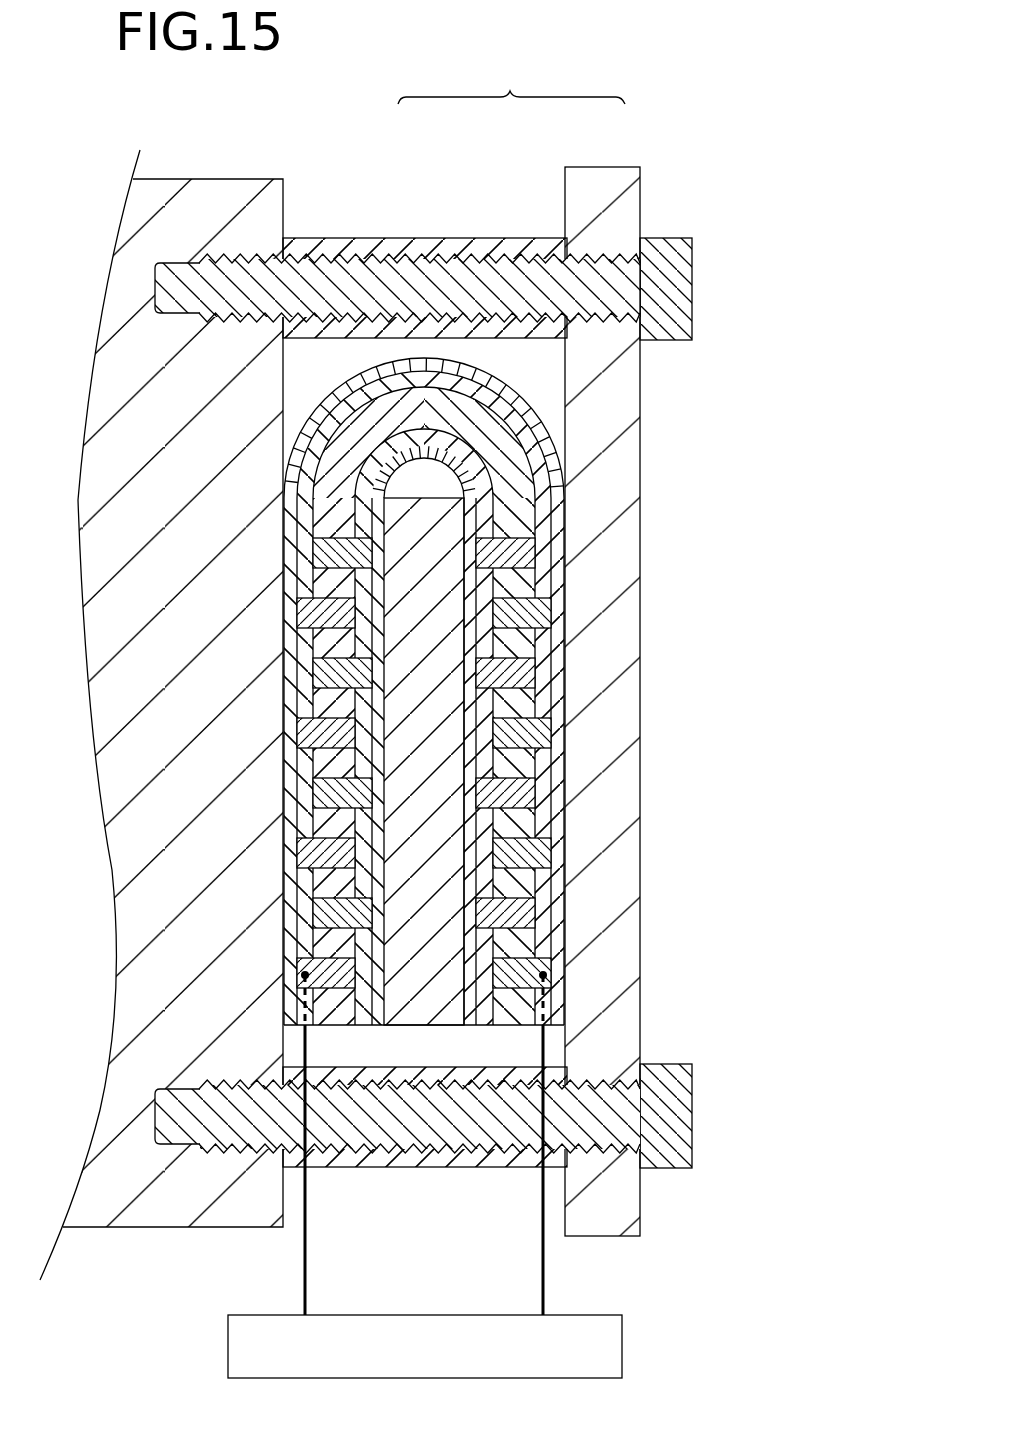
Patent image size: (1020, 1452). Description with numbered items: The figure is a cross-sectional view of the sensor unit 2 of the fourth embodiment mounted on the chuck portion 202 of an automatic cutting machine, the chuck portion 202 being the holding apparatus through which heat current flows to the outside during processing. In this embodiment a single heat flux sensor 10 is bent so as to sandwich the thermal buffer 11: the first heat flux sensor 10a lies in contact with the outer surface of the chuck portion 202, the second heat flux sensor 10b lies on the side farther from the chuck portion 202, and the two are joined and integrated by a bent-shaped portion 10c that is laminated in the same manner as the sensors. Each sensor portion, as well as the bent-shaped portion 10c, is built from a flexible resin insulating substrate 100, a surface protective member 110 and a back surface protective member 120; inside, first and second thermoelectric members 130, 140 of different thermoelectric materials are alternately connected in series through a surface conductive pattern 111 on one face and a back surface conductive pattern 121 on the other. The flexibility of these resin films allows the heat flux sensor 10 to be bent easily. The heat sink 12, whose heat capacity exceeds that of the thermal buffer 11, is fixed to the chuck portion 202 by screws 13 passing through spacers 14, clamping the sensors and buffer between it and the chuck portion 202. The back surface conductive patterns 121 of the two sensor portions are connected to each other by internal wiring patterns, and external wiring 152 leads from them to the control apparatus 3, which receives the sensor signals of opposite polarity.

The sensor unit 2 is at (511, 84).
The control apparatus 3 is at (622, 1350).
The heat flux sensor 10 is at (373, 563).
The first heat flux sensor 10a is at (328, 528).
The second heat flux sensor 10b is at (505, 535).
The bent-shaped portion 10c is at (330, 392).
The thermal buffer 11 is at (430, 515).
The heat sink 12 is at (597, 186).
The screw 13 is at (663, 330).
The spacer 14 is at (548, 248).
The insulating substrate 100 is at (325, 641).
The surface protective member 110 is at (420, 420).
The surface conductive pattern 111 is at (292, 940).
The back surface protective member 120 is at (300, 580).
The back surface conductive pattern 121 is at (300, 965).
The first thermoelectric member 130 is at (283, 862).
The second thermoelectric member 140 is at (288, 948).
The external wiring 152 is at (304, 1286).
The chuck portion 202 is at (213, 197).